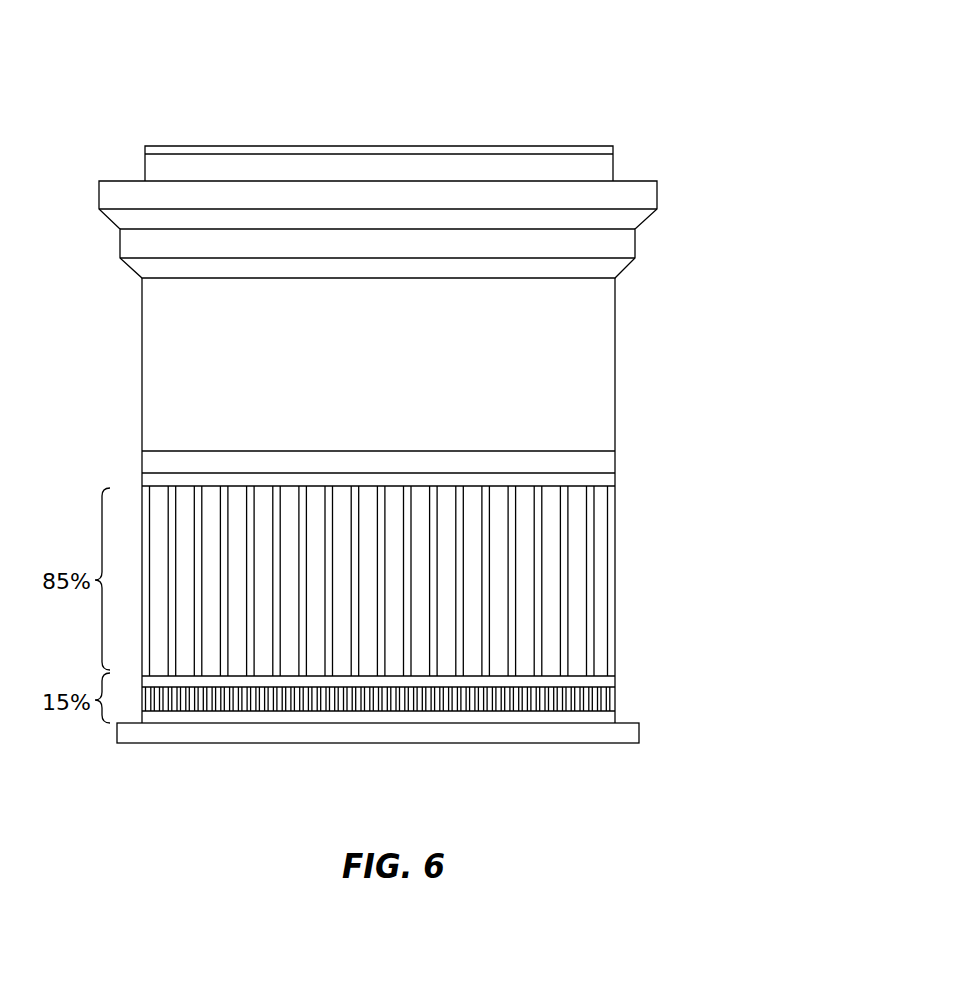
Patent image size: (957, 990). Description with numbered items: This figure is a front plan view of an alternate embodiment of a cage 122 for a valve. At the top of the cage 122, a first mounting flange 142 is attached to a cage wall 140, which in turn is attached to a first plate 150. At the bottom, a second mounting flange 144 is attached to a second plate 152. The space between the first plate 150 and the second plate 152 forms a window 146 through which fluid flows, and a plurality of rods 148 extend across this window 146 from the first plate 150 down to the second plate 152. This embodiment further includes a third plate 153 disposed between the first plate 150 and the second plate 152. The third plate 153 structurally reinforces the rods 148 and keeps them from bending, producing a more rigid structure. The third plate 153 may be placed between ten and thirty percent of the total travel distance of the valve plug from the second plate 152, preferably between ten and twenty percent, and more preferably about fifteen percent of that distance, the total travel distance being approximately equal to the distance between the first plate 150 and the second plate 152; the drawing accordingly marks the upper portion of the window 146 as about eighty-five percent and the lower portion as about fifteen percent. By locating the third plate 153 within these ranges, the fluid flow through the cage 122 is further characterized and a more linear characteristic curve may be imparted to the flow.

The cage 122 is at (629, 77).
The first mounting flange 142 is at (658, 197).
The cage wall 140 is at (598, 351).
The first plate 150 is at (600, 485).
The window 146 is at (440, 602).
The rods 148 is at (610, 640).
The third plate 153 is at (613, 682).
The second plate 152 is at (603, 718).
The second mounting flange 144 is at (635, 735).